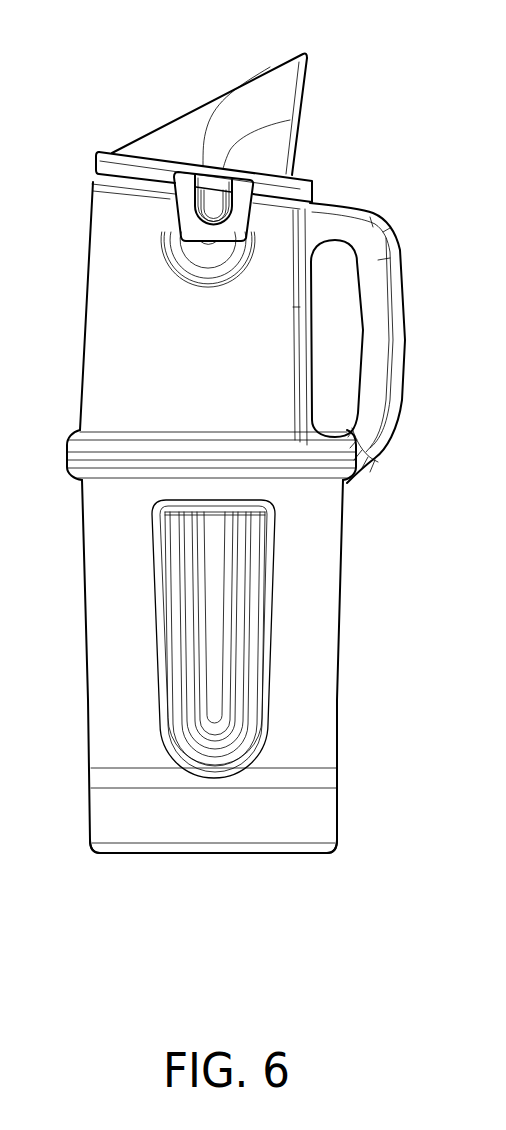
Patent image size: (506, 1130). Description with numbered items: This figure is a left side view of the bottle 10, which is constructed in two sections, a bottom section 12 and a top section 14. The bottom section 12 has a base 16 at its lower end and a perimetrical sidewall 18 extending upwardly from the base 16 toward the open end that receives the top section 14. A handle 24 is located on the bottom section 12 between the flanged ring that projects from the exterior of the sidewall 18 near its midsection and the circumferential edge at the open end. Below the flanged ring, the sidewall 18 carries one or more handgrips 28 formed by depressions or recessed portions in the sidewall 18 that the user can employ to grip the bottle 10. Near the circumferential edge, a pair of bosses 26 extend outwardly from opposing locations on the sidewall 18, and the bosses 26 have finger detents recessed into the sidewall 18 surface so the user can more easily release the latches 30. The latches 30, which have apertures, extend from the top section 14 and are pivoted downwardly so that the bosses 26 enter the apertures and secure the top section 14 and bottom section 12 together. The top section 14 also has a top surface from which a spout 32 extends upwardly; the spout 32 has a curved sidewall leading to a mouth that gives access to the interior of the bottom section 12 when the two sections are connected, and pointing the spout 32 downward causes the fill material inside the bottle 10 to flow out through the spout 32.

The bottle 10 is at (13, 95).
The bottom section 12 is at (343, 635).
The top section 14 is at (184, 115).
The base 16 is at (307, 852).
The perimetrical sidewall 18 is at (115, 633).
The handle 24 is at (405, 340).
The bosses 26 is at (216, 202).
The handgrips 28 is at (238, 612).
The latches 30 is at (190, 228).
The spout 32 is at (308, 54).